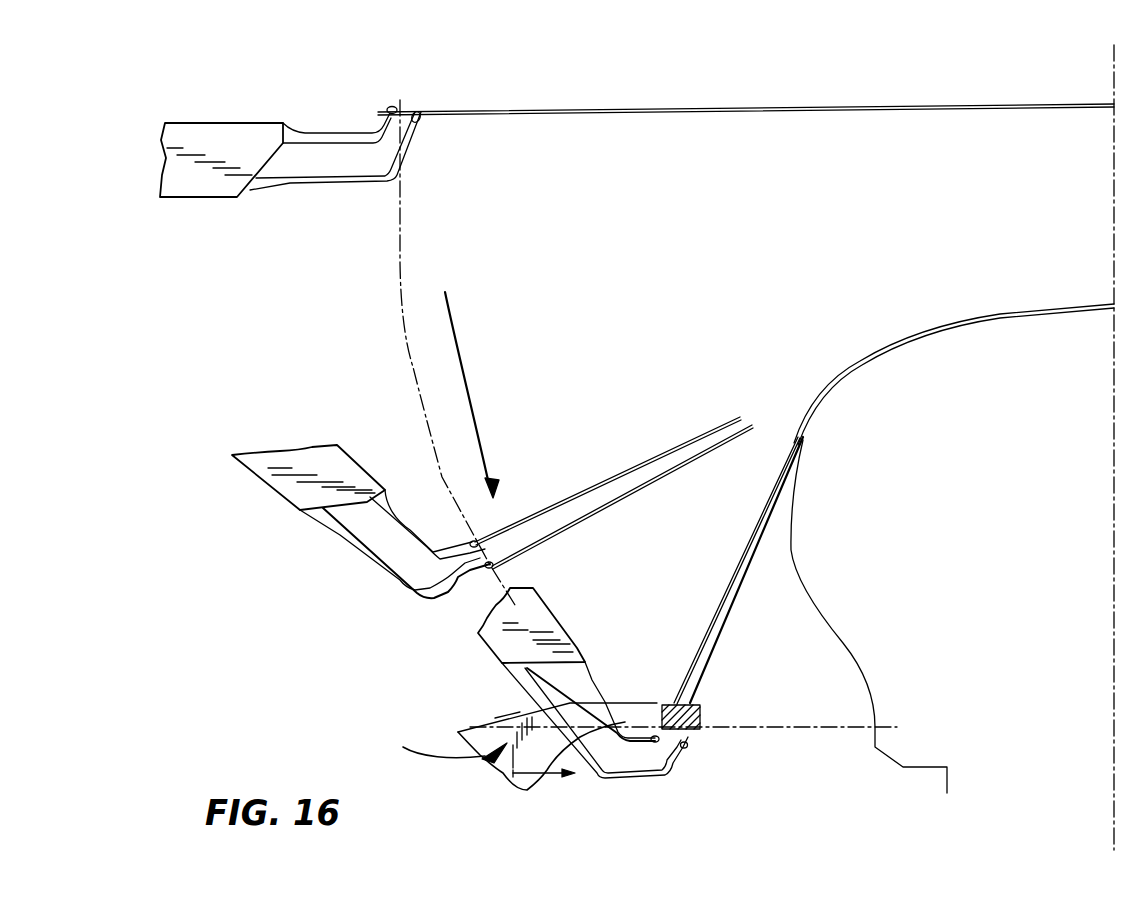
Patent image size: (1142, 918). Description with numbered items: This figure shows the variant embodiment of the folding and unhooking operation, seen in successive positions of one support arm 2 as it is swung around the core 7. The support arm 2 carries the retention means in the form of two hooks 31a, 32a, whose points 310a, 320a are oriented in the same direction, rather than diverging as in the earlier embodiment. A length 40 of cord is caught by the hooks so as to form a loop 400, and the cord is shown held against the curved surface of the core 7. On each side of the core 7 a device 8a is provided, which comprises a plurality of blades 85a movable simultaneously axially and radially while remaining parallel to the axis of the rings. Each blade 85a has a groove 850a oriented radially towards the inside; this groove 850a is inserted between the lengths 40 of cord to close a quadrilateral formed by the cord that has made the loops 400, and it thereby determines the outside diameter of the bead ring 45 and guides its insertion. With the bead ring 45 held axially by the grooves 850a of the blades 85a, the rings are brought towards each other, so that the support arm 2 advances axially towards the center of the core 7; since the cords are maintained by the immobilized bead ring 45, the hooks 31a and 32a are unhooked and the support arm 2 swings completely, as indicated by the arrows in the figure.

The support arm 2 is at (192, 188).
The hook 31a is at (303, 133).
The hook 32a is at (247, 190).
The point 310a is at (386, 111).
The point 320a is at (415, 125).
The length of cord 40 is at (703, 105).
The loop 400 is at (501, 546).
The core 7 is at (950, 328).
The device 8a is at (507, 746).
The blade 85a is at (493, 730).
The groove 850a is at (705, 698).
The bead ring 45 is at (692, 742).